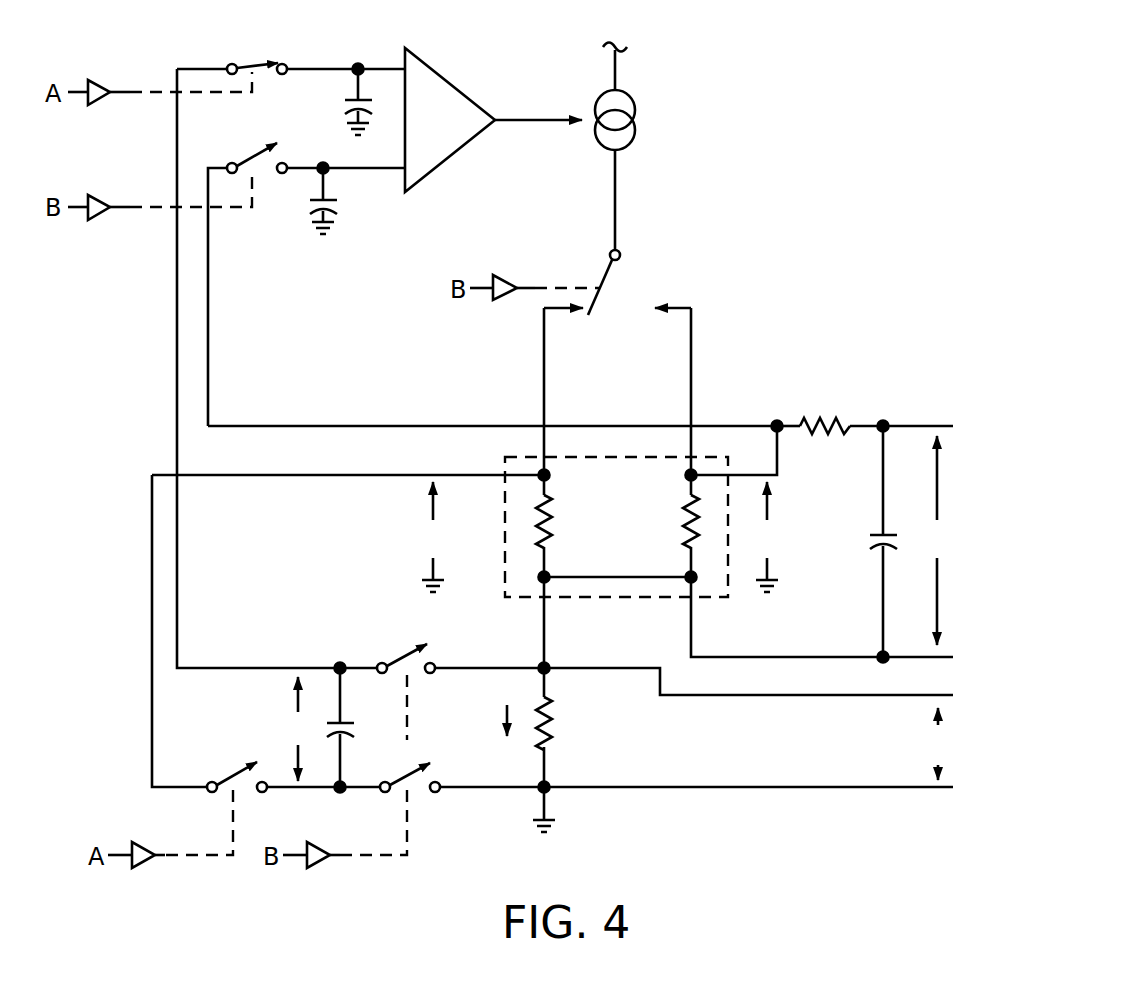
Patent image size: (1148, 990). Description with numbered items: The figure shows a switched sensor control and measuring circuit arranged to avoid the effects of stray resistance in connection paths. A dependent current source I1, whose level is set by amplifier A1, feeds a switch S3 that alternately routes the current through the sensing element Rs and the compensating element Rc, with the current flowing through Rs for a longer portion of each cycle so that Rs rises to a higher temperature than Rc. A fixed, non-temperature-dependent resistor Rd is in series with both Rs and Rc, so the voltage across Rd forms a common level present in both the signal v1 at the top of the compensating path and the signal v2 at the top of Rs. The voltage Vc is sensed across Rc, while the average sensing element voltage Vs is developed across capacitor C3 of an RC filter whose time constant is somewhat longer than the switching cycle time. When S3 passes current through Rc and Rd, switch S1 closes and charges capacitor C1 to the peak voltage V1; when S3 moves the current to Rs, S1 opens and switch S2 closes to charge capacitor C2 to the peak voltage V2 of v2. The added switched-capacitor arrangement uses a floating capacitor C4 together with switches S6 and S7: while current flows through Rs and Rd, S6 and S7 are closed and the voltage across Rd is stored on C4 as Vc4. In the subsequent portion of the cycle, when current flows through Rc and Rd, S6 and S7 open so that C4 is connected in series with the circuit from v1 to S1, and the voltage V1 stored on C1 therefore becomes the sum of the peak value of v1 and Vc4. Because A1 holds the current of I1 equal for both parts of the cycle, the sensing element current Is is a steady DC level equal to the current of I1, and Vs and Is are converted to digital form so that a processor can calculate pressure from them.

The switch S1 is at (232, 52).
The switch S2 is at (247, 273).
The switch S3 is at (614, 282).
The switch S6 is at (406, 646).
The switch S7 is at (410, 766).
The capacitor C1 is at (339, 104).
The capacitor C2 is at (343, 203).
The capacitor C3 is at (856, 542).
The capacitor C4 is at (355, 728).
The amplifier A1 is at (493, 120).
The dependent current source I1 is at (632, 130).
The compensating element Rc is at (562, 539).
The sensing element Rs is at (676, 526).
The fixed resistor Rd is at (537, 728).
The peak voltage V1 is at (359, 55).
The peak voltage V2 is at (324, 156).
The signal v1 is at (497, 463).
The signal v2 is at (764, 412).
The compensating element voltage Vc is at (435, 537).
The average sensing element voltage Vs is at (853, 538).
The voltage across capacitor C4 Vc4 is at (299, 727).
The sensing element current Is is at (906, 744).